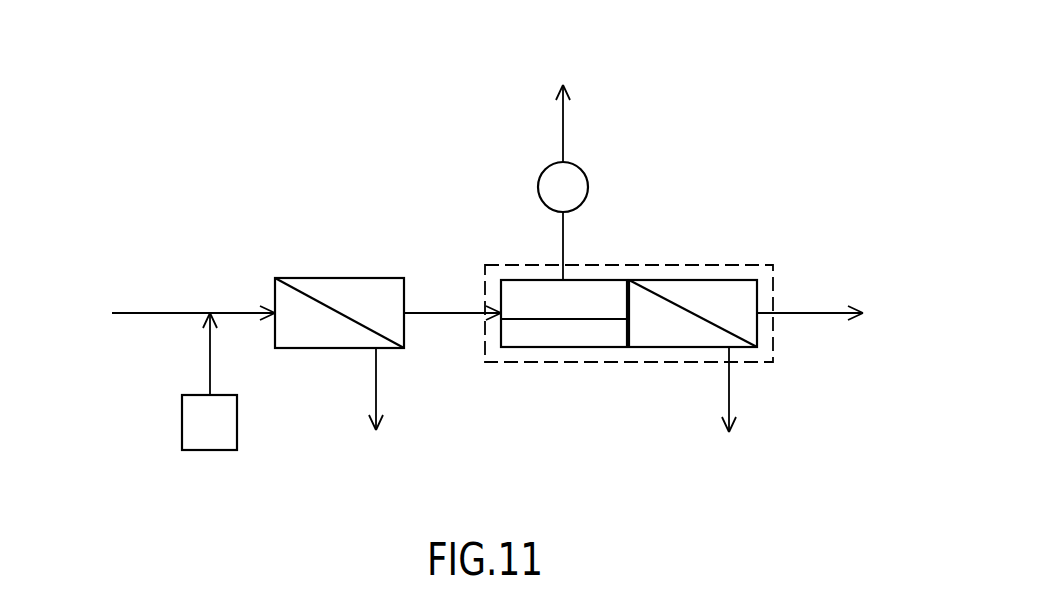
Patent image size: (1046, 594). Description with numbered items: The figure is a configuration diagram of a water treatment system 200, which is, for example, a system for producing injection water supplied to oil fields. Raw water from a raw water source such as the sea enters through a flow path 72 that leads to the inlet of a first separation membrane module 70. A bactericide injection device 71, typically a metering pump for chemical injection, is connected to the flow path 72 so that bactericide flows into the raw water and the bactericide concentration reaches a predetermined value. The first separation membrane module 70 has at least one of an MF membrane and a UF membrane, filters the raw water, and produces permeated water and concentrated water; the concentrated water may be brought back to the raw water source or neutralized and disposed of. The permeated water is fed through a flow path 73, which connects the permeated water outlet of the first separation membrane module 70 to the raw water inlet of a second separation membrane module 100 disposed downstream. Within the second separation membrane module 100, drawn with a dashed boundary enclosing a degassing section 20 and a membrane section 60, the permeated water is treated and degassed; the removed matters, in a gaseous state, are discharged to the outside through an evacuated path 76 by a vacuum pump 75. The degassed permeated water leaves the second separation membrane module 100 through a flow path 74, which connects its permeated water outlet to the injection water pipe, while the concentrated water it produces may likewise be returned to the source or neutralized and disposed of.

The water treatment system 200 is at (748, 78).
The second separation membrane module 100 is at (731, 265).
The electrolysis unit 20 is at (530, 347).
The reverse osmosis membrane unit 60 is at (660, 348).
The first separation membrane module 70 is at (337, 278).
The bactericide injection device 71 is at (210, 450).
The flow path 72 is at (235, 312).
The flow path 73 is at (450, 312).
The flow path 74 is at (806, 312).
The vacuum pump 75 is at (588, 187).
The evacuated path 76 is at (563, 238).